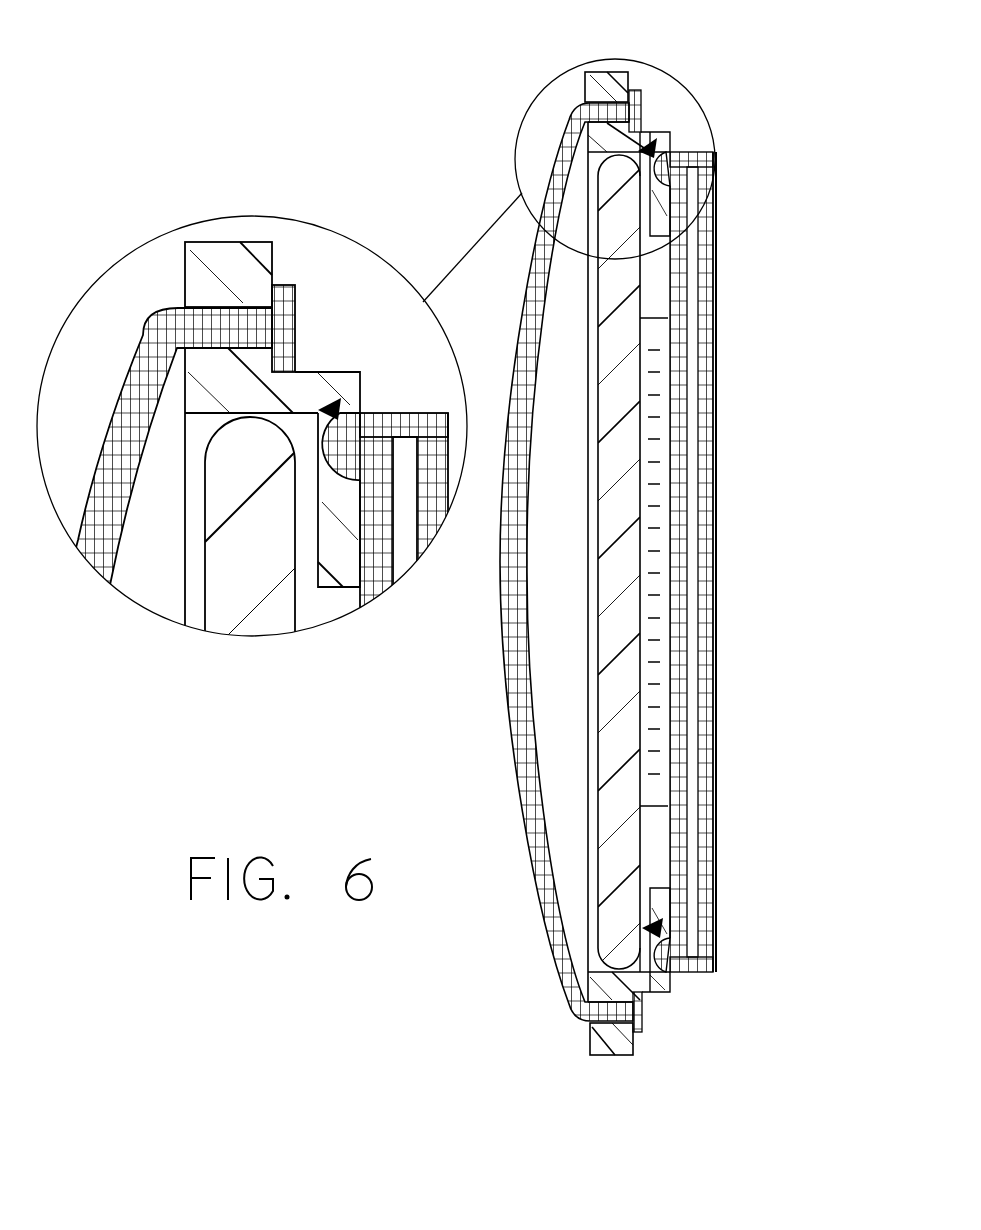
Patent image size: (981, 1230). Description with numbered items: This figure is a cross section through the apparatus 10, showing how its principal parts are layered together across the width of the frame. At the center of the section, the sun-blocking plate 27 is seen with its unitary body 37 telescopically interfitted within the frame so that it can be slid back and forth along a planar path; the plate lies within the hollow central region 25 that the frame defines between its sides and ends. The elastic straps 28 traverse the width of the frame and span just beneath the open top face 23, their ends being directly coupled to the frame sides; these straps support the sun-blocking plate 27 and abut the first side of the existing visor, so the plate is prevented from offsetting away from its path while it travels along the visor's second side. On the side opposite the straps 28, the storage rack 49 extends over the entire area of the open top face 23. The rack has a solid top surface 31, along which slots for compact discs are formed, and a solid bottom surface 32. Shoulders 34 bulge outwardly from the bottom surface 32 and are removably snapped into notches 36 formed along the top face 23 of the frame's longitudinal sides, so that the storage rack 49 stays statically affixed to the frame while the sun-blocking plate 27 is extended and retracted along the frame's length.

The apparatus 10 is at (382, 804).
The open top face 23 is at (660, 143).
The hollow central region 25 is at (595, 684).
The sun-blocking plate 27 is at (608, 745).
The elastic straps 28 is at (155, 335).
The top surface 31 is at (717, 266).
The bottom surface 32 is at (660, 295).
The shoulders 34 is at (672, 150).
The notches 36 is at (586, 74).
The unitary body 37 is at (600, 862).
The storage rack 49 is at (712, 470).